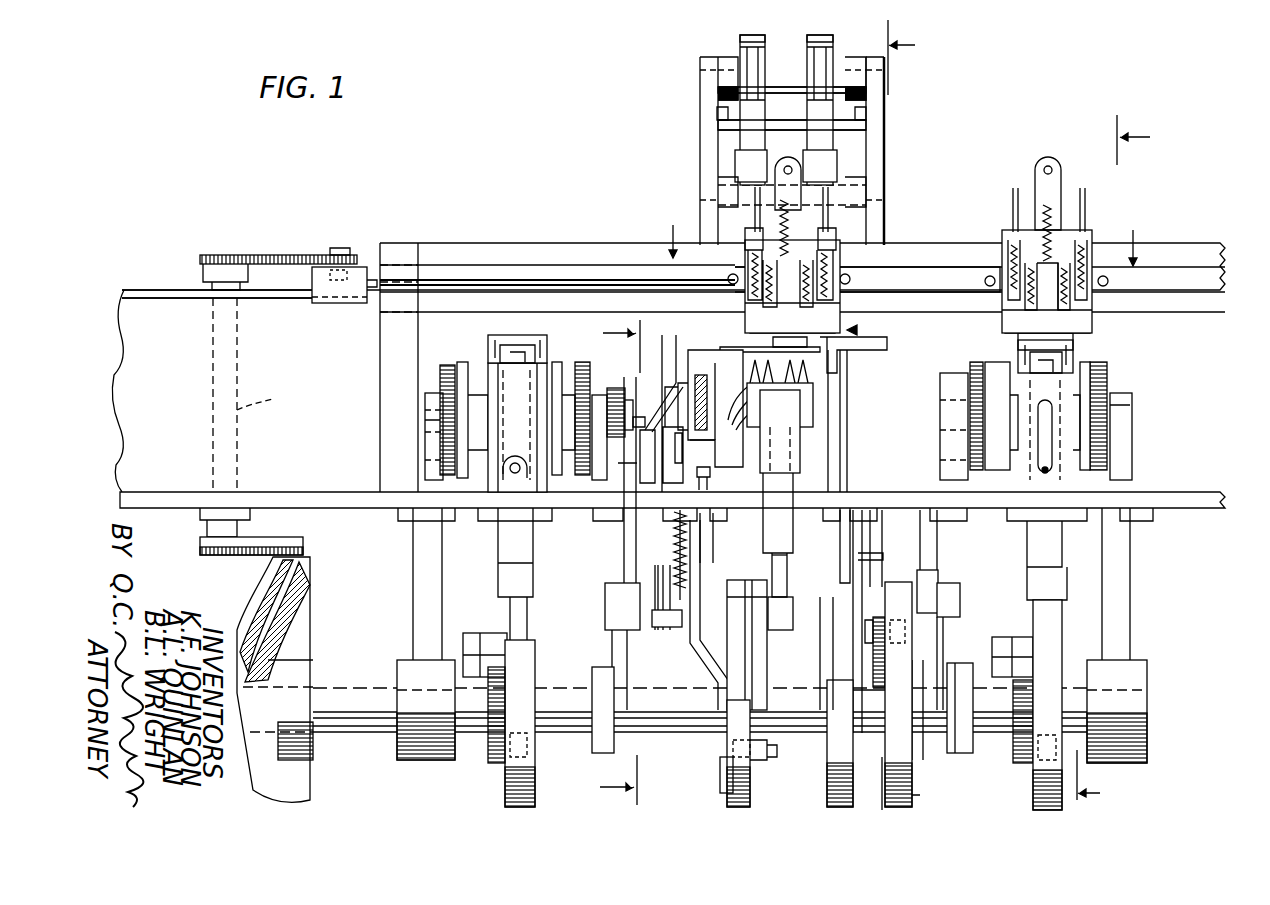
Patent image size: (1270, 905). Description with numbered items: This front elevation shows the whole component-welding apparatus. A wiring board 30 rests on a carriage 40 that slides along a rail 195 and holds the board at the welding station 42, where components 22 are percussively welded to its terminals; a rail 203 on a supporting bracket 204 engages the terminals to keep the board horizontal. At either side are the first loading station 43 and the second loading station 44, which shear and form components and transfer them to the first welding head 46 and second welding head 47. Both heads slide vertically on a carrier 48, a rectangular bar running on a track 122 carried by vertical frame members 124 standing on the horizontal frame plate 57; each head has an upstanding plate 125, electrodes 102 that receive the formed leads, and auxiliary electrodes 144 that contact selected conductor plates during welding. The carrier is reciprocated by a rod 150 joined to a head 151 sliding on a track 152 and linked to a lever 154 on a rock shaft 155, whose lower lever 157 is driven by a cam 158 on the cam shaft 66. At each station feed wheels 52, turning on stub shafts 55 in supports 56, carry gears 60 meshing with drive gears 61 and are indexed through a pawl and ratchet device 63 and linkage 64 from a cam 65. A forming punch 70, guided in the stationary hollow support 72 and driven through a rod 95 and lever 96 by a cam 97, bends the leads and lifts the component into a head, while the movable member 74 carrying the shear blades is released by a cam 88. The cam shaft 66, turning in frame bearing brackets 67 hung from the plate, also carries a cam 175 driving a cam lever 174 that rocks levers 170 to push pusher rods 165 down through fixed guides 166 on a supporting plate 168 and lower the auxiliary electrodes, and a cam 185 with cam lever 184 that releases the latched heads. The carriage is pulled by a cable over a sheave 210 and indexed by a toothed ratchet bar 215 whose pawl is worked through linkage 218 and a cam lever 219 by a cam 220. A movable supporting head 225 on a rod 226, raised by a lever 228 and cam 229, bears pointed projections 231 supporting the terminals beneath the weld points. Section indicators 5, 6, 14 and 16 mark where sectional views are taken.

The section line 5- 5 is at (904, 233).
The section line 6- 6 is at (1123, 458).
The section line 14-14 / frame 14 is at (824, 415).
The section line 16- 16 is at (603, 560).
The components 22 is at (521, 356).
The wiring board 30 is at (745, 351).
The carriage 40 is at (698, 391).
The welding station 42 is at (857, 331).
The first component forming and loading station 43 is at (1075, 337).
The second component forming and loading station 44 is at (519, 349).
The first welding head 46 is at (1045, 250).
The second welding head 47 is at (750, 235).
The carrier 48 is at (930, 271).
The feed rolls 52 is at (440, 373).
The stub shafts 55 is at (418, 426).
The supports 56 is at (425, 438).
The horizontal frame plate 57 is at (380, 508).
The gears 60 is at (443, 366).
The drive gears 61 is at (445, 361).
The pawl and ratchet device 63 is at (612, 388).
The linkage 64 is at (622, 547).
The cam 65 is at (603, 665).
The cam shaft 66 is at (370, 692).
The frame bearing brackets 67 is at (413, 618).
The forming punch 70 is at (500, 354).
The stationary hollow support 72 is at (505, 492).
The movable member 74 is at (488, 339).
The cam 88 is at (1033, 790).
The rod 95 is at (513, 633).
The lever 96 is at (482, 750).
The cam 97 is at (505, 783).
The electrodes 102 is at (756, 316).
The track 122 is at (519, 251).
The vertical frame members 124 is at (710, 145).
The plate 125 is at (1042, 174).
The auxiliary electrodes 144 is at (755, 215).
The rod 150 is at (578, 268).
The head 151 is at (328, 303).
The track 152 is at (288, 291).
The lever 154 is at (266, 256).
The rock shaft 155 is at (266, 411).
The lever 157 is at (283, 545).
The cam 158 is at (320, 570).
The pusher rods 165 is at (740, 42).
The fixed guides 166 is at (837, 144).
The supporting plate 168 is at (705, 130).
The levers 170 is at (753, 33).
The cam lever 174 is at (873, 671).
The cam 175 is at (837, 775).
The cam lever 184 is at (865, 701).
The cam 185 is at (897, 753).
The rail 195 is at (650, 386).
The rail 203 is at (870, 360).
The supporting bracket 204 is at (823, 452).
The sheave 210 is at (713, 543).
The toothed ratchet bar 215 is at (713, 454).
The linkage 218 is at (675, 600).
The cam lever 219 is at (700, 666).
The cam 220 is at (718, 778).
The movable supporting head 225 is at (845, 381).
The rod 226 is at (775, 573).
The lever 228 is at (760, 667).
The cam 229 is at (770, 762).
The pointed projections 231 is at (763, 404).